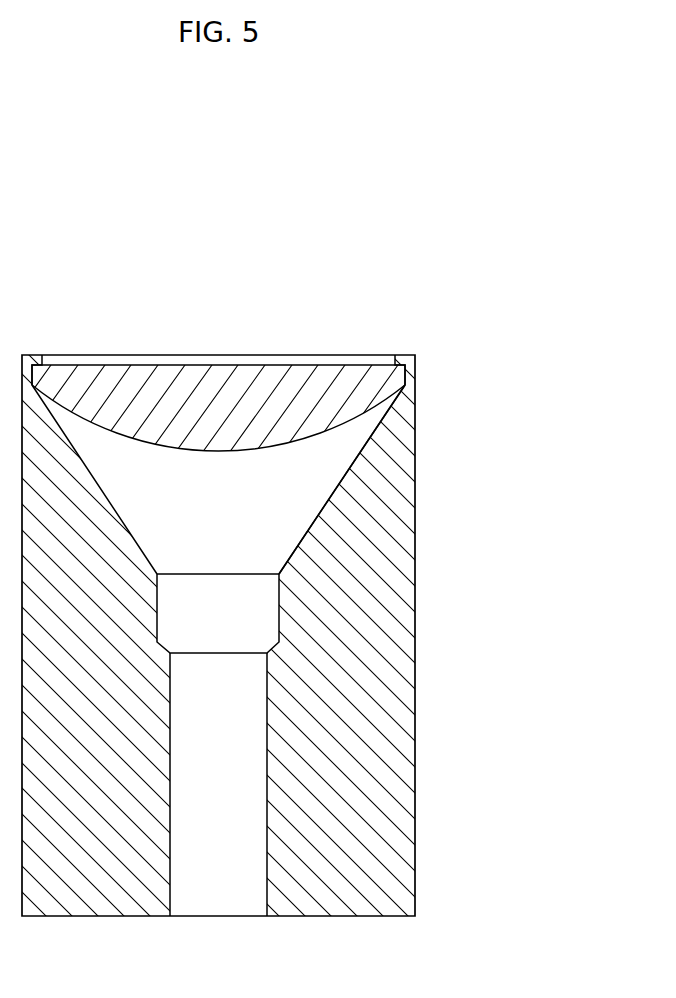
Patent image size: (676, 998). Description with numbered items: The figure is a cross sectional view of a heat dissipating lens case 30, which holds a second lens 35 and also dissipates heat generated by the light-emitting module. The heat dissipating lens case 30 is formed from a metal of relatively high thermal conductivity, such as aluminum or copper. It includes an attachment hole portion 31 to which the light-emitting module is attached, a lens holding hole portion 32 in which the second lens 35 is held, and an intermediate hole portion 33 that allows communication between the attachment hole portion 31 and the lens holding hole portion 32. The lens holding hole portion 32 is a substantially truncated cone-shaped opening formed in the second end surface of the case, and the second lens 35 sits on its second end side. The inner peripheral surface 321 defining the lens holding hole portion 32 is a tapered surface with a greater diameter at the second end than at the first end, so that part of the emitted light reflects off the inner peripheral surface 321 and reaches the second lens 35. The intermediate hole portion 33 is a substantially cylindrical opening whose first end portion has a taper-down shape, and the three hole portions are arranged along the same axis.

The heat dissipating lens case 30 is at (490, 748).
The attachment hole portion 31 is at (257, 820).
The lens holding hole portion 32 is at (307, 488).
The inner peripheral surface 321 is at (299, 527).
The intermediate hole portion 33 is at (280, 600).
The second lens 35 is at (333, 395).